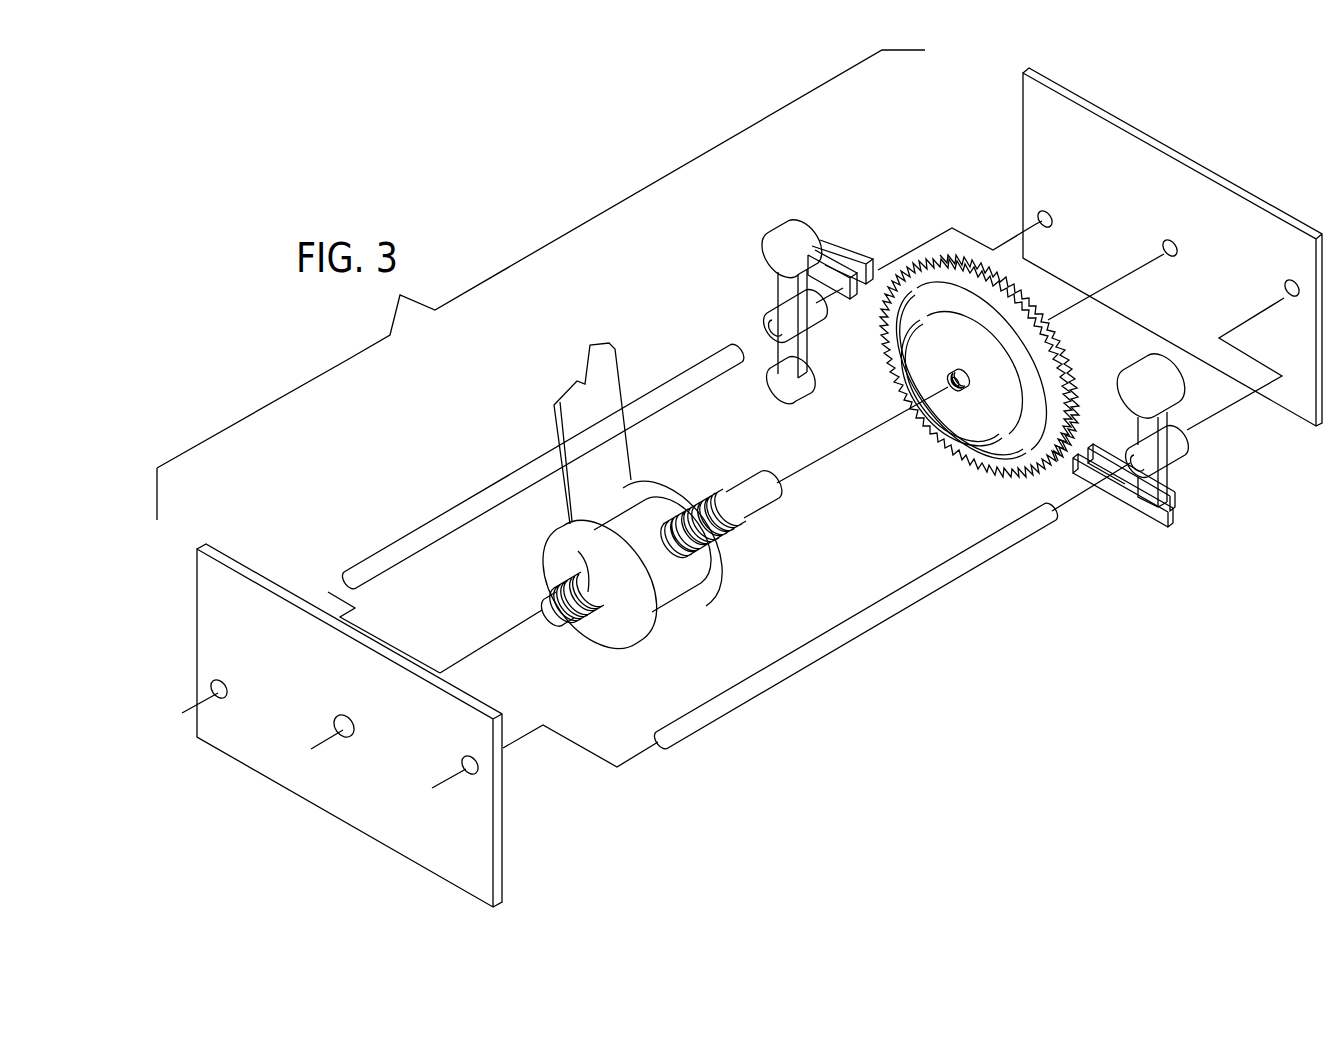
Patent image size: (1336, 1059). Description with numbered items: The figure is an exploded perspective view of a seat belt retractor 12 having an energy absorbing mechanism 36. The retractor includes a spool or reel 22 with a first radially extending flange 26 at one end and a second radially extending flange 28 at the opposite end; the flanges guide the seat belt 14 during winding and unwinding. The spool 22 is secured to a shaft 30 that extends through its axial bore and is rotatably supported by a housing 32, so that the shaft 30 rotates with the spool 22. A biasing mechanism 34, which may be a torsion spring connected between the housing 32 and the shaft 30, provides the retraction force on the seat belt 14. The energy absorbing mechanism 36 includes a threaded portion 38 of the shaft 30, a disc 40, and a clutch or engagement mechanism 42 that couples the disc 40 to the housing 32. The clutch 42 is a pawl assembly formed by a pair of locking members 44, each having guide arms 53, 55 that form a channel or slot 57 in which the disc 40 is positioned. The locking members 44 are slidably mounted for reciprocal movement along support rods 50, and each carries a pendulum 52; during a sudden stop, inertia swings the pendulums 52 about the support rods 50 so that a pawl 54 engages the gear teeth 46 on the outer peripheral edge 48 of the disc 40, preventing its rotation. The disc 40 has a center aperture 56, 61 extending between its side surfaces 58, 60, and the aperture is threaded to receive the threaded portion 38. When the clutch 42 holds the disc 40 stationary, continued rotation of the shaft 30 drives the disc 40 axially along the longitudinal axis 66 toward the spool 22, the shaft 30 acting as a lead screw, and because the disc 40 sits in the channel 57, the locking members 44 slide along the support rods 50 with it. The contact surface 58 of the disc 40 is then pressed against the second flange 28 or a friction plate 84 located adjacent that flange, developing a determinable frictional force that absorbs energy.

The seat belt retractor 12 is at (739, 746).
The seat belt 14 is at (607, 387).
The spool or reel 22 is at (850, 422).
The first radially extending flange 26 is at (630, 636).
The second radially extending flange 28 is at (700, 597).
The shaft 30 is at (546, 586).
The housing 32 is at (402, 835).
The biasing mechanism 34 is at (592, 620).
The energy absorbing mechanism 36 is at (577, 552).
The threaded portion 38 is at (742, 513).
The disc 40 is at (923, 266).
The clutch or engagement mechanism 42 is at (979, 365).
The locking members 44 is at (800, 228).
The gear teeth 46 is at (1005, 288).
The outer peripheral edge 48 is at (968, 267).
The support rods 50 is at (435, 523).
The pendulums 52 is at (773, 247).
The guide arm 53 is at (770, 267).
The pawl 54 is at (812, 277).
The guide arm 55 is at (850, 247).
The center aperture 56 is at (943, 395).
The channel or slot 57 is at (862, 263).
The side surface 58 is at (1003, 463).
The side surface 60 is at (1062, 362).
The center aperture 61 is at (940, 381).
The longitudinal axis 66 is at (462, 664).
The friction plate 84 is at (723, 573).